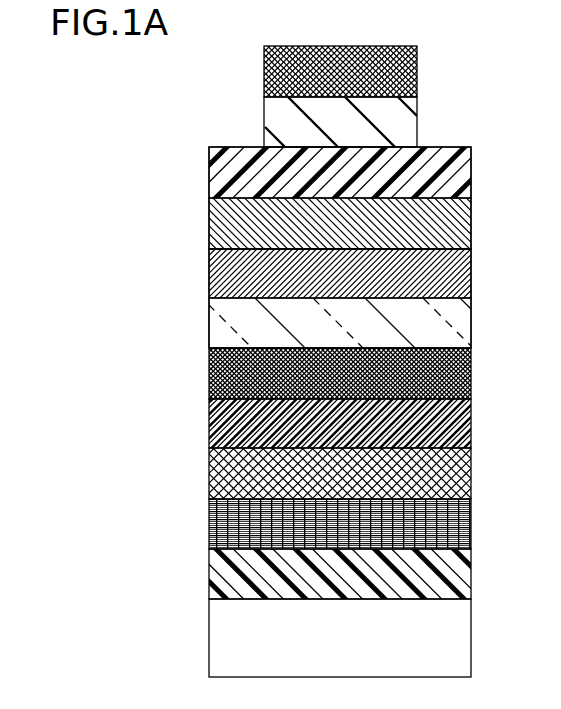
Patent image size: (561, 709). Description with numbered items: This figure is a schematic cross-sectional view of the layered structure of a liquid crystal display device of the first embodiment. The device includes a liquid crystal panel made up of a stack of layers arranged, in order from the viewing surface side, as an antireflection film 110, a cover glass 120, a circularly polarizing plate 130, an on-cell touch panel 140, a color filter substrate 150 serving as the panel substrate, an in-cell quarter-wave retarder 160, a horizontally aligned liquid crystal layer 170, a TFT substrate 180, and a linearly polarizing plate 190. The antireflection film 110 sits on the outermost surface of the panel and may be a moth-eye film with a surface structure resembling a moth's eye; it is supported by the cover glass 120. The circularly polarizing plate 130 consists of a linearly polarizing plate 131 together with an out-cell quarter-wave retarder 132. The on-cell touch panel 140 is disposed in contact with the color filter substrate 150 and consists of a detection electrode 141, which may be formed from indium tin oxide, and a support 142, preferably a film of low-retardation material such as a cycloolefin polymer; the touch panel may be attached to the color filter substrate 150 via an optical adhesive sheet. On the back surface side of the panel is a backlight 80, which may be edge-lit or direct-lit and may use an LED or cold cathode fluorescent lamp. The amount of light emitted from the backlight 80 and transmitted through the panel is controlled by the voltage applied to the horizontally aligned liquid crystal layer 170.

The backlight 80 is at (218, 636).
The antireflection film 110 is at (264, 70).
The cover glass 120 is at (275, 122).
The circularly polarizing plate 130 is at (110, 147).
The linearly polarizing plate 131 is at (209, 170).
The λ/4 retarder (out-cell retarder) 132 is at (209, 221).
The on-cell touch panel 140 is at (110, 248).
The detection electrode 141 is at (209, 271).
The support 142 is at (218, 322).
The color filter substrate (panel substrate) 150 is at (209, 371).
The λ/4 retarder (in-cell retarder) 160 is at (215, 421).
The horizontally aligned liquid crystal layer 170 is at (212, 471).
The TFT substrate 180 is at (212, 523).
The linearly polarizing plate 190 is at (209, 571).